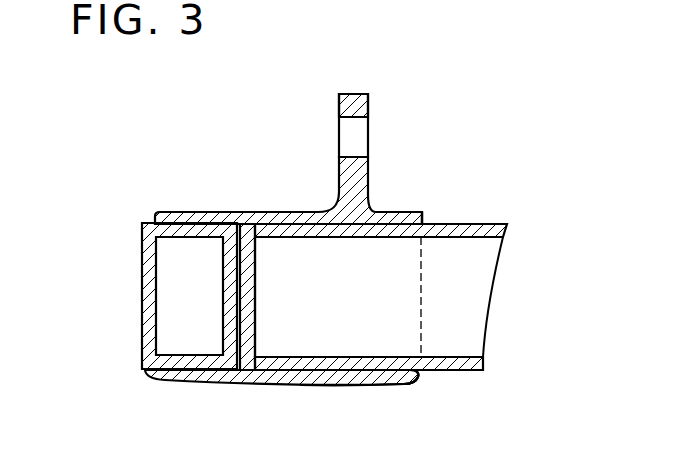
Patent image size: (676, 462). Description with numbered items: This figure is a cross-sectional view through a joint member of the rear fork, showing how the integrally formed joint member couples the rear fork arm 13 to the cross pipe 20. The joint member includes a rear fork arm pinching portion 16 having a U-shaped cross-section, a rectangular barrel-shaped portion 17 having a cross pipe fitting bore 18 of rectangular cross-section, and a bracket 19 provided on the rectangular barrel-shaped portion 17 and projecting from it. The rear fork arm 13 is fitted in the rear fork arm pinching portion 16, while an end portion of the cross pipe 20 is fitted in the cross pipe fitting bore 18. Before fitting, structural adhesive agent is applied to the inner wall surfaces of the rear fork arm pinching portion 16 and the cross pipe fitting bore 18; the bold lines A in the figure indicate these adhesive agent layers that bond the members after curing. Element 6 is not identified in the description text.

The upper plate / flange 6 is at (206, 212).
The rear fork arm 13 is at (141, 305).
The rear fork arm pinching portion 16 is at (202, 377).
The rectangular barrel-shaped portion 17 is at (401, 212).
The cross pipe fitting bore 18 is at (426, 222).
The bracket 19 is at (368, 103).
The cross pipe 20 is at (492, 232).
The adhesive agent layer A is at (354, 229).